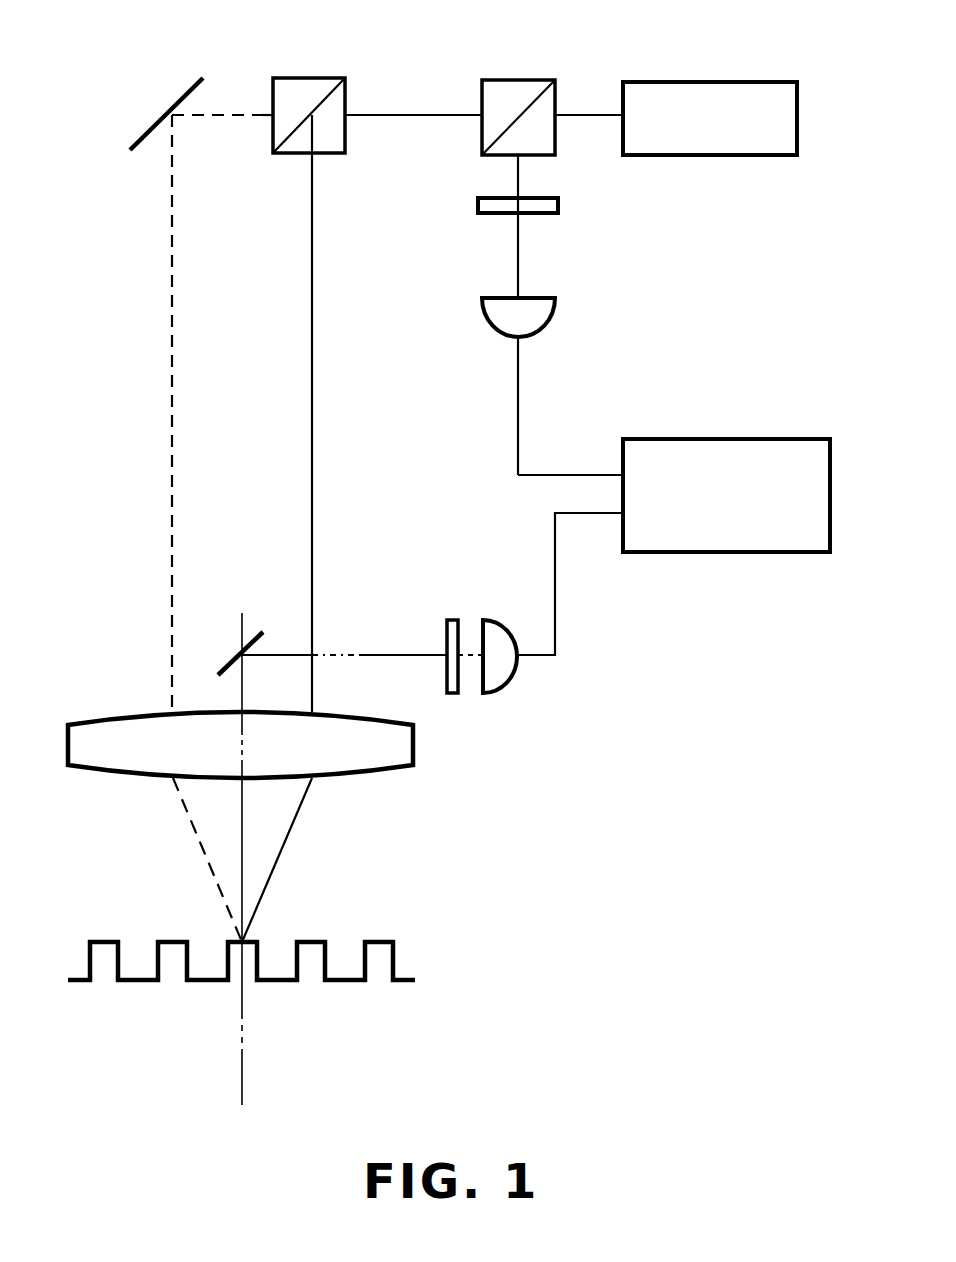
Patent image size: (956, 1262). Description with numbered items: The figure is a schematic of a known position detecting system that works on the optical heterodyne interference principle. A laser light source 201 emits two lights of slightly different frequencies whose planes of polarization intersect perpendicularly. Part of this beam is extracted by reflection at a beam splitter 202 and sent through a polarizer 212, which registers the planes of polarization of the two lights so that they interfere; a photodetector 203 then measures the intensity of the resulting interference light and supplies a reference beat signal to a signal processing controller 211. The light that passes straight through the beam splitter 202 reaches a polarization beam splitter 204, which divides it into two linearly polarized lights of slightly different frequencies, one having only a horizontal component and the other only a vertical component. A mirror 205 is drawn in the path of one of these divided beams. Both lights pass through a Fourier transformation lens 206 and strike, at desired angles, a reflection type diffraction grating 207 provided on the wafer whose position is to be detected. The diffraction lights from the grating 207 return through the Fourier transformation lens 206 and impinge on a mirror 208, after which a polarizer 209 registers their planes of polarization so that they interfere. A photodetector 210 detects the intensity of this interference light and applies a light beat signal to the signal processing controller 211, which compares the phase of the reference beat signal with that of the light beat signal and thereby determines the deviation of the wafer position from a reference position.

The laser light source 201 is at (737, 82).
The beam splitter 202 is at (525, 80).
The photodetector 203 is at (553, 317).
The polarization beam splitter 204 is at (317, 78).
The mirror 205 is at (148, 125).
The Fourier transformation lens 206 is at (415, 752).
The reflection type diffraction grating 207 is at (398, 965).
The mirror 208 is at (262, 630).
The polarizer 209 is at (448, 618).
The photodetector 210 is at (503, 627).
The signal processing controller 211 is at (740, 439).
The polarizer 212 is at (560, 212).